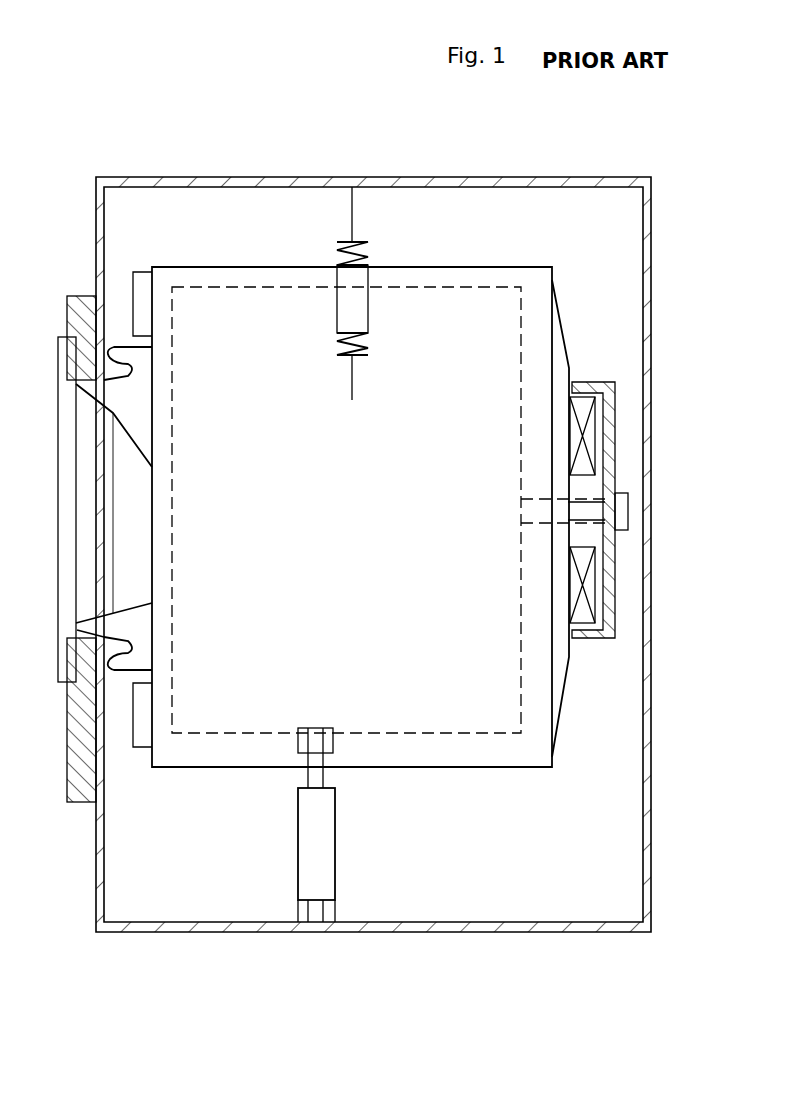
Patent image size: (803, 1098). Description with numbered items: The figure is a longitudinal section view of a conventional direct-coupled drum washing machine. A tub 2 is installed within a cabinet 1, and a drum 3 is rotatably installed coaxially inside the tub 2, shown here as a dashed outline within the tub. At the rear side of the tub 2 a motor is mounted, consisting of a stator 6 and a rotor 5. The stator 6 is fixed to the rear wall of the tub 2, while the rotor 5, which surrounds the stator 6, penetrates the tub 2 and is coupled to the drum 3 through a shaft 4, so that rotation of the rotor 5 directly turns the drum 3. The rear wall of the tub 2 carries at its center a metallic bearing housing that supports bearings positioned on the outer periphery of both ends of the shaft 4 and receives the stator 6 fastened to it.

The cabinet 1 is at (181, 177).
The tub 2 is at (476, 267).
The drum 3 is at (262, 287).
The shaft 4 is at (586, 512).
The rotor 5 is at (610, 590).
The stator 6 is at (586, 436).